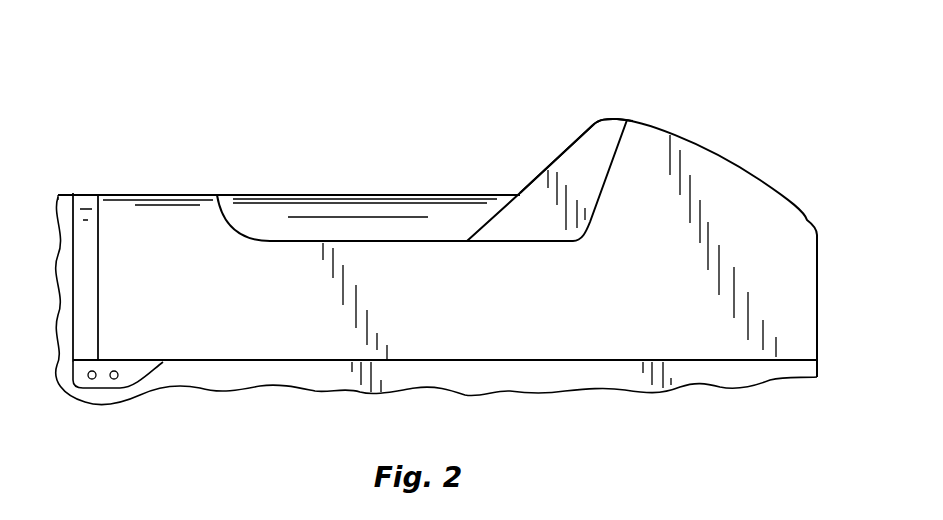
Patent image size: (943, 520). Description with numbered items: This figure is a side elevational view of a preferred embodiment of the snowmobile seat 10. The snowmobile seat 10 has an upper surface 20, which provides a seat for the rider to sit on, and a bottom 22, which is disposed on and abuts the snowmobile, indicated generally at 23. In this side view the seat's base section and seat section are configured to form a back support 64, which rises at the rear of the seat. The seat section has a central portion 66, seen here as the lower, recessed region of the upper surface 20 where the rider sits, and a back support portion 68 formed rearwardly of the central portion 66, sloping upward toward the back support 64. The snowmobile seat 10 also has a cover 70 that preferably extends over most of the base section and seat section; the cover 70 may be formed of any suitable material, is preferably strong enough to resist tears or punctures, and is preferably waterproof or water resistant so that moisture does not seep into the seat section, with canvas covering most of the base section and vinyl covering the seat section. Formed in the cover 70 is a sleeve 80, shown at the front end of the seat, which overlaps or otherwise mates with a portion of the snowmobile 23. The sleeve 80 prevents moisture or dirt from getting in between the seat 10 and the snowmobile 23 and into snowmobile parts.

The snowmobile seat 10 is at (506, 66).
The upper surface 20 is at (202, 193).
The bottom 22 is at (205, 362).
The snowmobile 23 is at (454, 375).
The back support 64 is at (613, 119).
The central portion 66 is at (360, 193).
The back support portion 68 is at (573, 138).
The cover 70 is at (70, 343).
The sleeve 80 is at (67, 228).